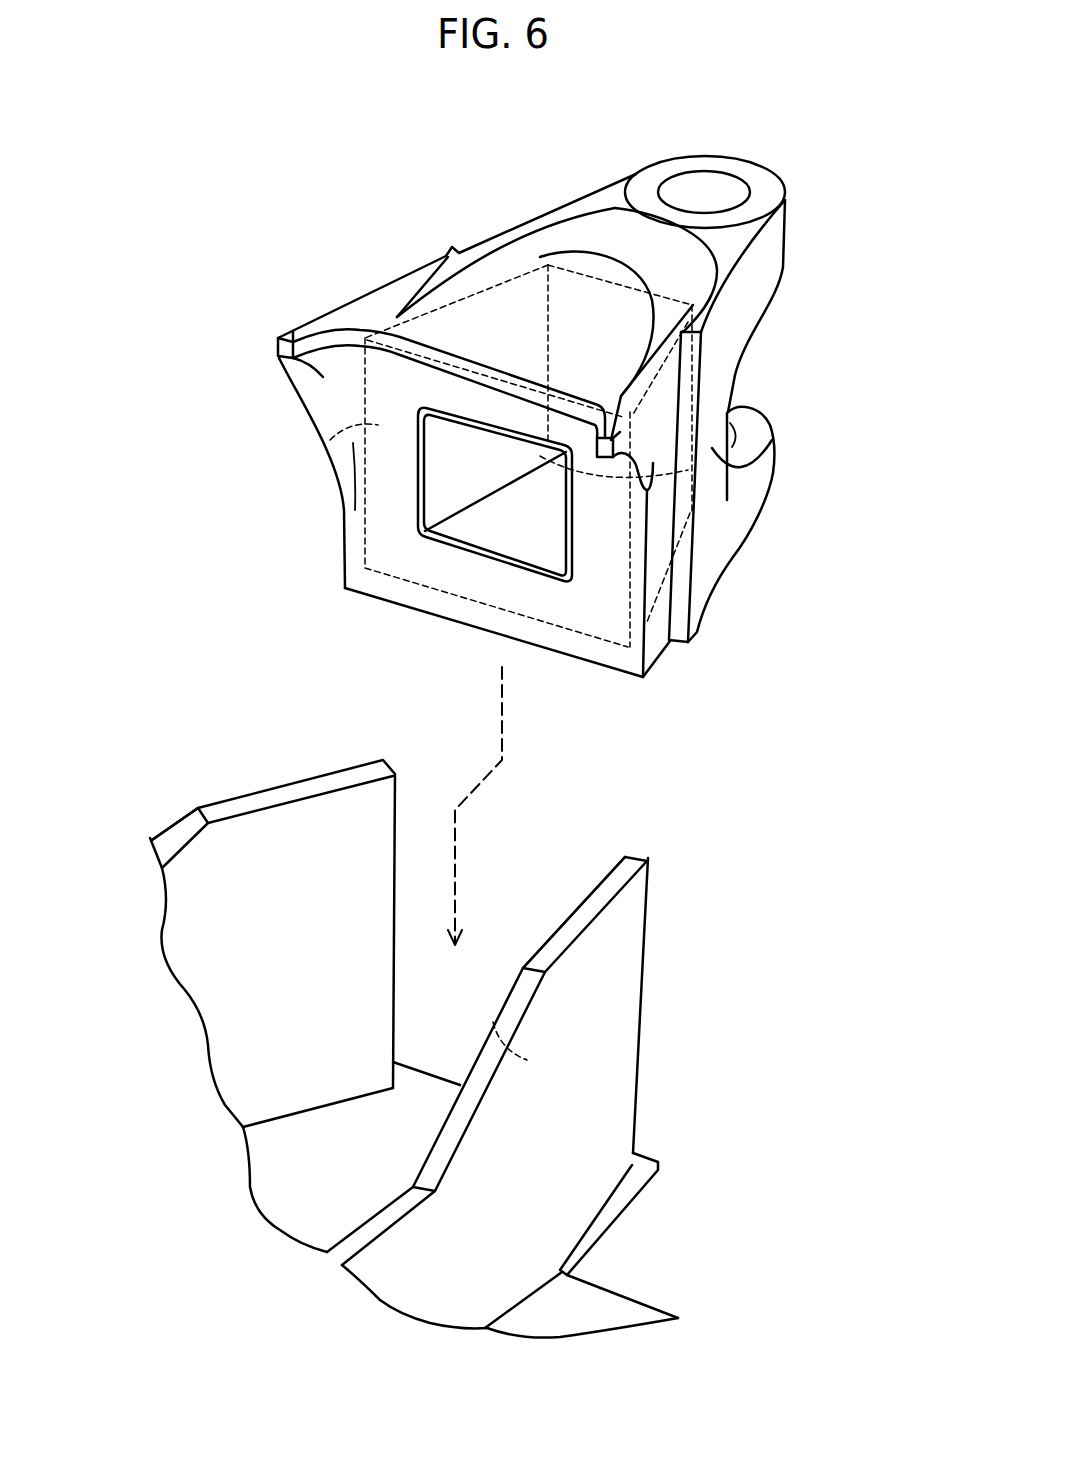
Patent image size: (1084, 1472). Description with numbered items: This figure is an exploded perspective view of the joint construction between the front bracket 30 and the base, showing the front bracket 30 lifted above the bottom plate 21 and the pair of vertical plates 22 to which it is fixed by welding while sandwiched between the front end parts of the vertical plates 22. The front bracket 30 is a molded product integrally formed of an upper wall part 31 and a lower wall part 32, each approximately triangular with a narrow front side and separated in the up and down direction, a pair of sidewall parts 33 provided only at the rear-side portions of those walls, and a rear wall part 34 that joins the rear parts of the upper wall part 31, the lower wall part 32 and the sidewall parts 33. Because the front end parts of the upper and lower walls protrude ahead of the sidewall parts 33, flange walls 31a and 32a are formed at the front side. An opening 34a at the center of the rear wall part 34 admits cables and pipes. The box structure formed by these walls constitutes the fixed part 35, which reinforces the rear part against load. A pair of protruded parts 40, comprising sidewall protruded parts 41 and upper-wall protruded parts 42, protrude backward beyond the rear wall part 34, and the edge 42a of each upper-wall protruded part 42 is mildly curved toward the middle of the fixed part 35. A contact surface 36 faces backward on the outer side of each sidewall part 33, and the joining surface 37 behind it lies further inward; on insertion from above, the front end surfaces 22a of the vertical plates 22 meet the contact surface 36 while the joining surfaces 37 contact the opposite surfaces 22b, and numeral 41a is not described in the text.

The bottom plate 21 is at (603, 1305).
The vertical plates 22 is at (233, 1030).
The front end surfaces 22a is at (395, 827).
The opposite surfaces 22b is at (273, 857).
The front bracket 30 is at (383, 200).
The upper wall part 31 is at (565, 233).
The flange wall 31a is at (763, 252).
The lower wall part 32 is at (475, 587).
The flange wall 32a is at (767, 477).
The sidewall parts 33 is at (330, 437).
The rear wall part 34 is at (590, 617).
The opening 34a is at (473, 550).
The fixed part 35 is at (507, 323).
The contact surface 36 is at (453, 253).
The joining surface 37 is at (385, 380).
The protruded parts 40 is at (268, 318).
The sidewall protruded parts 41 is at (320, 398).
The leg crease 41a is at (330, 478).
The upper-wall protruded parts 42 is at (312, 330).
The edge 42a is at (325, 347).